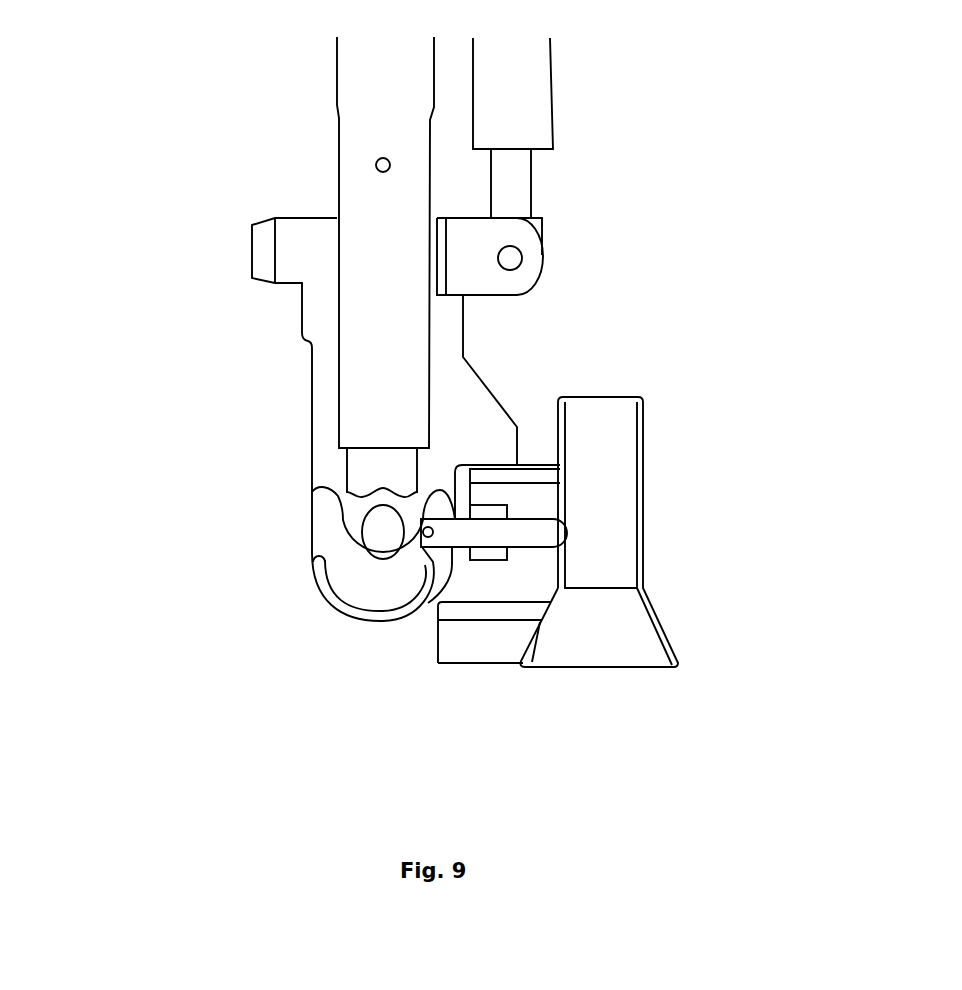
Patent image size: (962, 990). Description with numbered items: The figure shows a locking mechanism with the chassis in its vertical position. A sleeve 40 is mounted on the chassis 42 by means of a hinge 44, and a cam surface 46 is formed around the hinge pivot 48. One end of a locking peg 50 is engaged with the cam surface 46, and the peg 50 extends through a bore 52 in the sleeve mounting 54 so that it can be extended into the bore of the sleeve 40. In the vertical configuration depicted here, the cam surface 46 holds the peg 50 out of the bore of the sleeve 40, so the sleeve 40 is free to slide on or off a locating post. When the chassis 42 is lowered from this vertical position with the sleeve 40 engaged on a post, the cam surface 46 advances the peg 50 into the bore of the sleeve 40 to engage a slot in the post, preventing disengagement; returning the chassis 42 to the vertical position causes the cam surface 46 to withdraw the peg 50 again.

The sleeve 40 is at (642, 498).
The chassis 42 is at (360, 109).
The hinge 44 is at (313, 459).
The cam surface 46 is at (355, 598).
The hinge pivot 48 is at (372, 528).
The locking peg 50 is at (538, 526).
The bore 52 is at (482, 557).
The sleeve mounting 54 is at (508, 641).